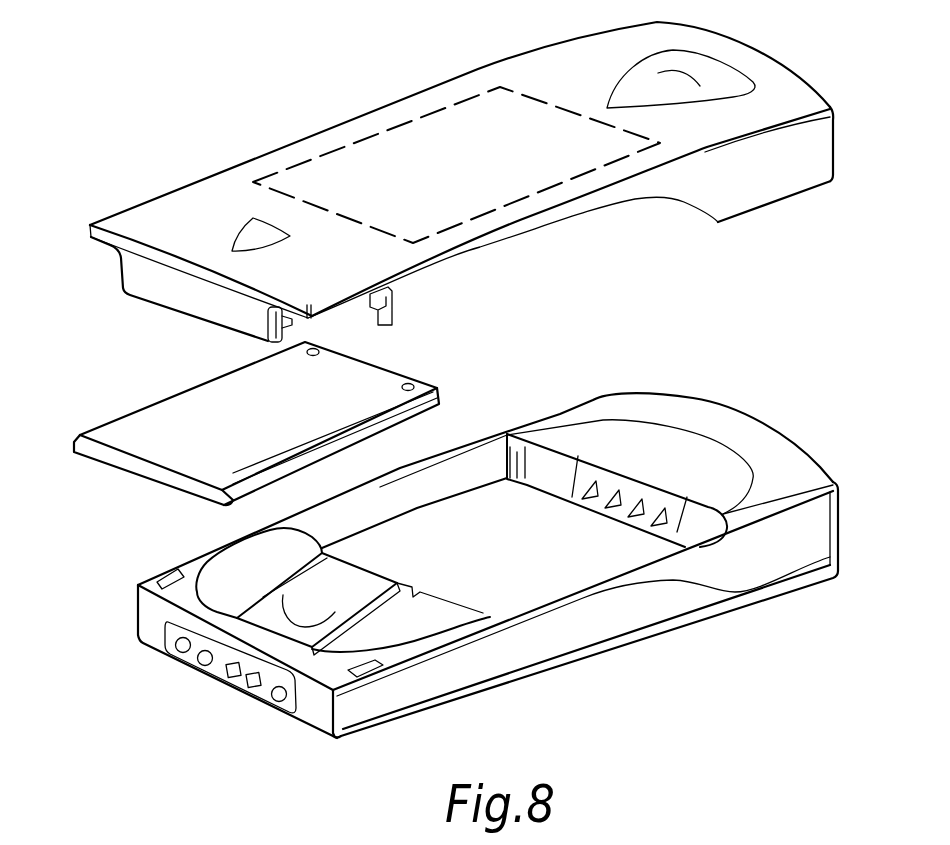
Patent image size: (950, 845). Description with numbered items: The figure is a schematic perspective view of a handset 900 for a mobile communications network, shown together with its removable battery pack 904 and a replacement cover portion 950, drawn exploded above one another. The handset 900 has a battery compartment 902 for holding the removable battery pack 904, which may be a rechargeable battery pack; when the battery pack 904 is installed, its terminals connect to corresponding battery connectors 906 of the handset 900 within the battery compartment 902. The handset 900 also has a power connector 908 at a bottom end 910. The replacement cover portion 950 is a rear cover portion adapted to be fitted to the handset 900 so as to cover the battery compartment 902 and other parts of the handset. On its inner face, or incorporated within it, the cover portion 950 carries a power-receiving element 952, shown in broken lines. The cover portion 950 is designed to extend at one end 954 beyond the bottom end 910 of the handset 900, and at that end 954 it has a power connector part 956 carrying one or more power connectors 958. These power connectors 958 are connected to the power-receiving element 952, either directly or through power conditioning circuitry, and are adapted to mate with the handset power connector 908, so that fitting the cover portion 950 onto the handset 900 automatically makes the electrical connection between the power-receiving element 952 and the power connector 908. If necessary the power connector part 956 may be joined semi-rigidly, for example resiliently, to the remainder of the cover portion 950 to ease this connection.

The handset 900 is at (454, 574).
The battery compartment 902 is at (530, 577).
The removable battery pack 904 is at (150, 417).
The battery connectors 906 is at (612, 486).
The power connector 908 is at (219, 666).
The bottom end 910 is at (147, 619).
The replacement cover portion 950 is at (421, 191).
The power-receiving element 952 is at (300, 166).
The end 954 is at (157, 212).
The power connector part 956 is at (157, 278).
The power connectors 958 is at (292, 321).